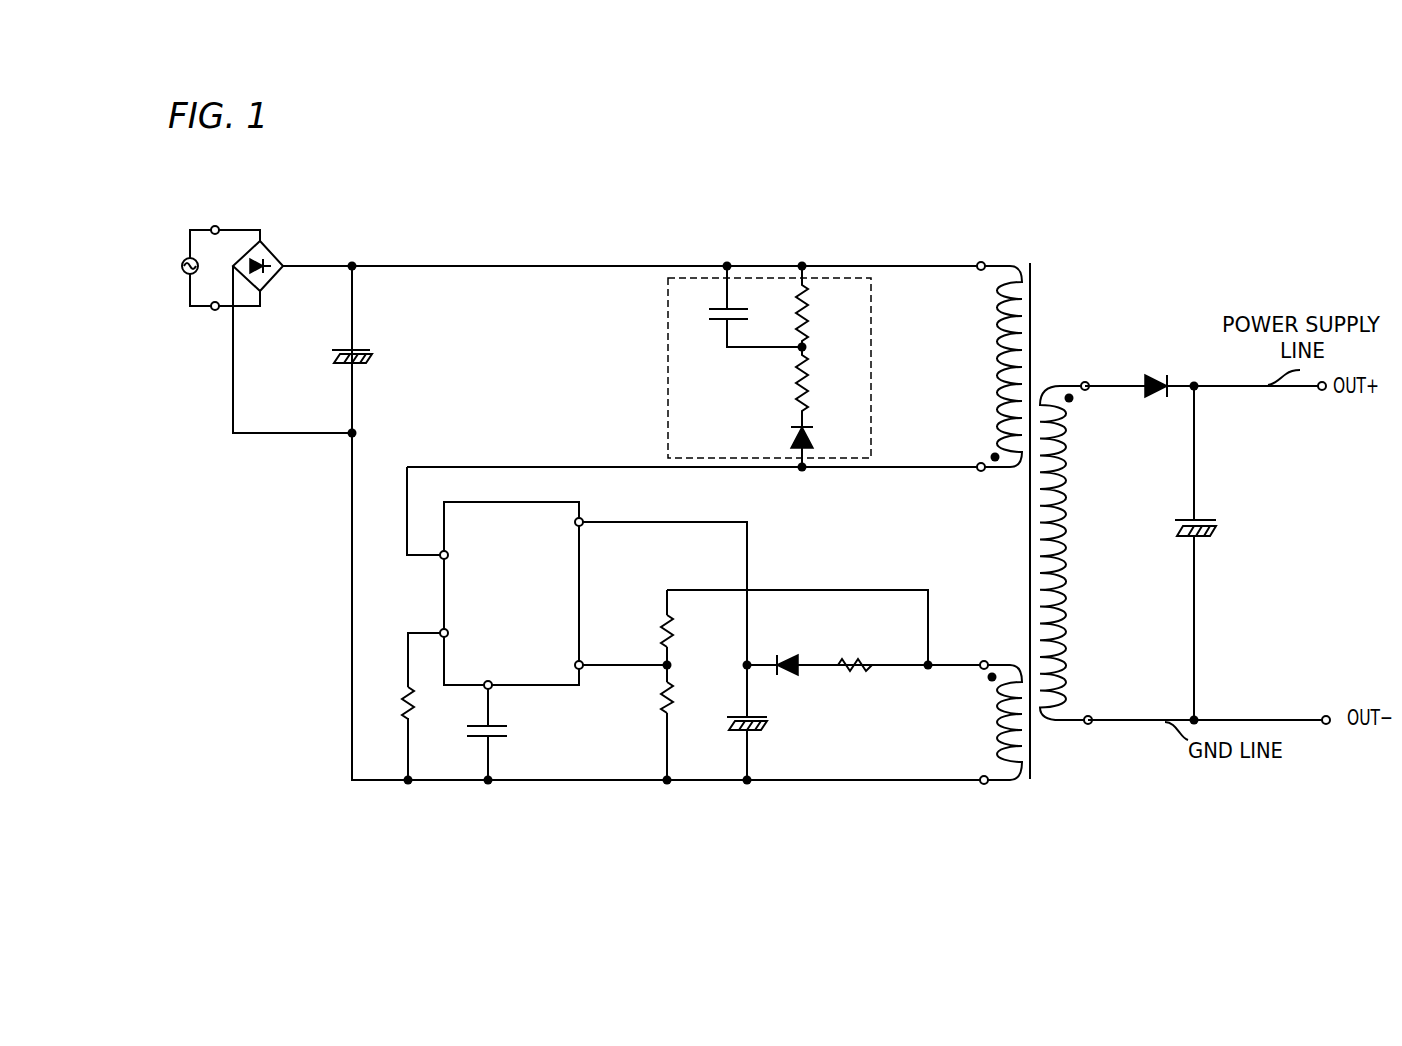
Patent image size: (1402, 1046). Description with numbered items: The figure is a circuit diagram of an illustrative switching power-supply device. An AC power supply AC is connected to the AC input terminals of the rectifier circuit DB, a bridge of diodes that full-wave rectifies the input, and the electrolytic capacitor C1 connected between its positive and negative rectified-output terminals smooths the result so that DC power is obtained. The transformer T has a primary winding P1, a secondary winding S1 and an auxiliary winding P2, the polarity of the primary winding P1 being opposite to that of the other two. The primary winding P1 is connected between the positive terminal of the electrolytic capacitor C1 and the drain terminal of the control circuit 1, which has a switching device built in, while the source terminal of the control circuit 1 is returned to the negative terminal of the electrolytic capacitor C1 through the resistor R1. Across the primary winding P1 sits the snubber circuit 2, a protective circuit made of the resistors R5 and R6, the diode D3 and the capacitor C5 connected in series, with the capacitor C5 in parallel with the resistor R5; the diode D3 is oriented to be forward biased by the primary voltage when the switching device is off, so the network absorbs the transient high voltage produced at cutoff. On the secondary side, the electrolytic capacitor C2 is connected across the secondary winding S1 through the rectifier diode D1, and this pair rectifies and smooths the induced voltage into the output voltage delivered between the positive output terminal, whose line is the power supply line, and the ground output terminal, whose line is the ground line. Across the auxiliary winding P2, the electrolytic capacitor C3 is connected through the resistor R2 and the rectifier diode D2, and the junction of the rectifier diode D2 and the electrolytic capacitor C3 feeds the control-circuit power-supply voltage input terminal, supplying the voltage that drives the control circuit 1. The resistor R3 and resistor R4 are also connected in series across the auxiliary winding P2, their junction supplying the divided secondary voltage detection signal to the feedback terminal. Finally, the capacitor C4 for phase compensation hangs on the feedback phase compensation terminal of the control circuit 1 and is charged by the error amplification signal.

The control circuit 1 is at (528, 502).
The snubber circuit 2 is at (792, 367).
The AC power supply AC is at (206, 268).
The rectifier circuit DB is at (267, 263).
The electrolytic capacitor C1 is at (352, 342).
The capacitor C5 is at (740, 306).
The resistor R5 is at (819, 306).
The resistor R6 is at (819, 387).
The diode D3 is at (818, 446).
The transformer T is at (1031, 508).
The primary winding P1 is at (996, 366).
The secondary winding S1 is at (1066, 553).
The auxiliary winding P2 is at (999, 722).
The rectifier diode D1 is at (1157, 371).
The electrolytic capacitor C2 is at (1195, 516).
The resistor R1 is at (394, 703).
The capacitor C4 is at (501, 730).
The resistor R3 is at (683, 631).
The resistor R4 is at (650, 697).
The rectifier diode D2 is at (789, 680).
The resistor R2 is at (855, 652).
The electrolytic capacitor C3 is at (764, 714).